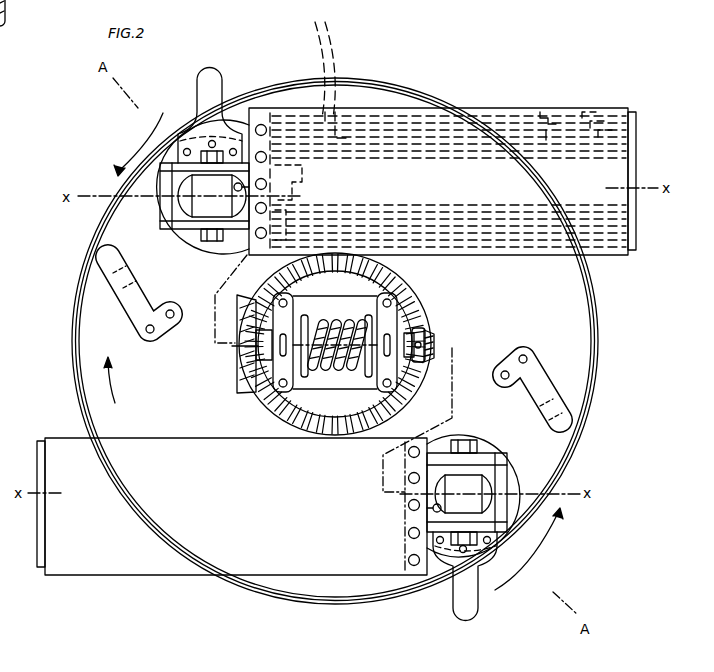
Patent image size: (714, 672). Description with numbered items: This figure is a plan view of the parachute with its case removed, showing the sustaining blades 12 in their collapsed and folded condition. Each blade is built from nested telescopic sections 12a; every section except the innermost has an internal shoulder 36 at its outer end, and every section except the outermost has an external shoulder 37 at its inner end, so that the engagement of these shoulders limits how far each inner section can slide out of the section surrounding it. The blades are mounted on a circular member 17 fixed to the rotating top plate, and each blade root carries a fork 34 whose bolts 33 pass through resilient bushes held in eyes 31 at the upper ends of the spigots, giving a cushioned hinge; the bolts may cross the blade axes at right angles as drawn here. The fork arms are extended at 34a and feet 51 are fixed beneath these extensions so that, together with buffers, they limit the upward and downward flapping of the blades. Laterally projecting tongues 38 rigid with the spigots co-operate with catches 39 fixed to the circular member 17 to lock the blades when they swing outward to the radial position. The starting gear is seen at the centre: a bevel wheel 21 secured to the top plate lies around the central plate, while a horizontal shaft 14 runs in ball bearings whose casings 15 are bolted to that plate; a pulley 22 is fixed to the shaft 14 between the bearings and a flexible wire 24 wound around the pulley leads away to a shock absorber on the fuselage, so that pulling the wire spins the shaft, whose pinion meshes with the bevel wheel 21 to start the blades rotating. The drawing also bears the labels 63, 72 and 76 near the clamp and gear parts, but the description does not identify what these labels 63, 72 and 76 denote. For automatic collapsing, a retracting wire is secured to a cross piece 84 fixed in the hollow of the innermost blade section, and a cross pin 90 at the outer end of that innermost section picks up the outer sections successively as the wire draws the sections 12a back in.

The telescopic sustaining blades 12 is at (370, 108).
The telescopic sections 12a is at (548, 118).
The horizontal shaft 14 is at (430, 345).
The casings 15 is at (380, 318).
The circular member 17 is at (94, 401).
The bevel wheel 21 is at (402, 292).
The pulley 22 is at (305, 318).
The flexible wire 24 is at (346, 368).
The eyes 31 is at (458, 490).
The bolts 33 is at (208, 240).
The forks 34 is at (196, 170).
The extensions 34a is at (172, 162).
The internal shoulder 36 is at (580, 115).
The external shoulder 37 is at (316, 65).
The tongues 38 is at (211, 80).
The catches 39 is at (106, 286).
The feet 51 is at (166, 195).
The pivot pin 63 is at (430, 511).
The end cap 72 is at (636, 128).
The bevel pinion 76 is at (243, 360).
The cross piece 84 is at (300, 174).
The cross pin 90 is at (636, 204).